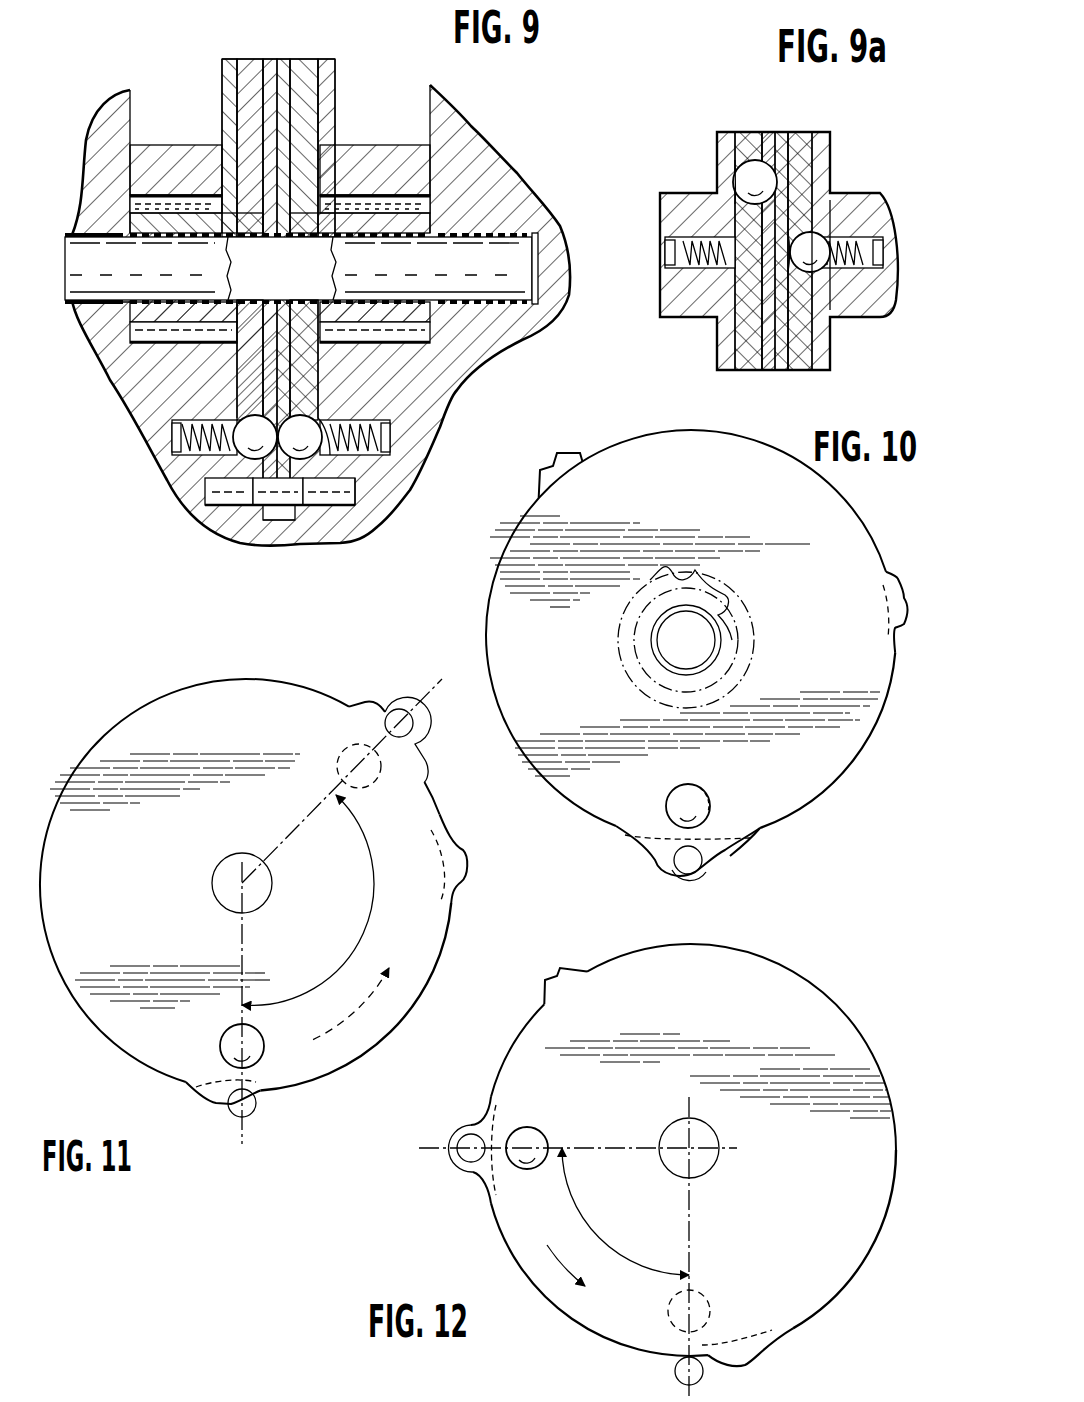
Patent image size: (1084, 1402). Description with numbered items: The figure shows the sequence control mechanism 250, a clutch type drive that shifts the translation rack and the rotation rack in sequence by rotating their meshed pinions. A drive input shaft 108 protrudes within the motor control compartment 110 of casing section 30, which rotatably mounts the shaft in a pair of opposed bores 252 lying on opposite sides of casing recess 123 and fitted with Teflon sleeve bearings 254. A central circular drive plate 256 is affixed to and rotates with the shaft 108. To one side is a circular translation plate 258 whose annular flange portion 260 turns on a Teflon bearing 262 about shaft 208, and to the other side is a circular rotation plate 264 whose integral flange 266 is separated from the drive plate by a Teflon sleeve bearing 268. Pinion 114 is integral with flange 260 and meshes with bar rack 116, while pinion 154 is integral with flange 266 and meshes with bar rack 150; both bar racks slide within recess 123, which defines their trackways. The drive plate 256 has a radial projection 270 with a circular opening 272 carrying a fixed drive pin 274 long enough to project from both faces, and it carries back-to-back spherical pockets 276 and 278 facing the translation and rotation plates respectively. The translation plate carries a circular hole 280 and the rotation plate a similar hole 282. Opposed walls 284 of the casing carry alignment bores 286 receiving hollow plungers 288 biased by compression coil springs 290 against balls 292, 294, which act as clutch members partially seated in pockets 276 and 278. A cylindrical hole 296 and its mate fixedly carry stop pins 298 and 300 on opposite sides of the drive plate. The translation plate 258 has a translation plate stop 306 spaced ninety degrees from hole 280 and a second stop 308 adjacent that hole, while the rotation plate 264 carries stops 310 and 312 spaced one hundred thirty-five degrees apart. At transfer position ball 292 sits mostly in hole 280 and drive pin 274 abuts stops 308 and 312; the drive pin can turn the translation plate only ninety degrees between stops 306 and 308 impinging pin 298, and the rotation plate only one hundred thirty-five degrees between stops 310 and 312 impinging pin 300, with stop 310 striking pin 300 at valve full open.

In FIG. 9, the casing section 30 is at (458, 132).
In FIG. 9, the drive input shaft 108 is at (75, 265).
In FIG. 10, the drive input shaft 108 is at (702, 638).
In FIG. 11, the drive input shaft 108 is at (258, 898).
In FIG. 12, the drive input shaft 108 is at (712, 1158).
In FIG. 9, the motor control compartment 110 is at (165, 345).
In FIG. 9, the pinion 114 is at (152, 203).
In FIG. 10, the pinion 114 is at (728, 582).
In FIG. 9, the bar rack 116 is at (180, 160).
In FIG. 9, the casing recess 123 is at (432, 130).
In FIG. 9, the bar rack 150 is at (390, 160).
In FIG. 9, the pinion 154 is at (496, 228).
In FIG. 10, the shaft 208 is at (655, 852).
In FIG. 9, the sequence control mechanism 250 is at (340, 100).
In FIG. 9, the opposed bores 252 is at (75, 312).
In FIG. 9, the sleeve bearings 254 is at (82, 225).
In FIG. 9, the drive plate 256 is at (281, 75).
In FIG. 9a, the drive plate 256 is at (775, 140).
In FIG. 9, the translation plate 258 is at (228, 60).
In FIG. 9a, the translation plate 258 is at (746, 134).
In FIG. 10, the translation plate 258 is at (815, 772).
In FIG. 11, the translation plate 258 is at (425, 920).
In FIG. 12, the translation plate 258 is at (838, 1035).
In FIG. 9, the annular flange portion 260 is at (195, 225).
In FIG. 9, the Teflon bearing 262 is at (143, 238).
In FIG. 9, the rotation plate 264 is at (335, 70).
In FIG. 9a, the rotation plate 264 is at (800, 136).
In FIG. 9, the flange 266 is at (335, 222).
In FIG. 9, the sleeve bearing 268 is at (378, 240).
In FIG. 9, the radial projection 270 is at (279, 510).
In FIG. 10, the radial projection 270 is at (708, 865).
In FIG. 11, the radial projection 270 is at (398, 708).
In FIG. 12, the radial projection 270 is at (456, 1142).
In FIG. 9, the circular opening 272 is at (298, 497).
In FIG. 9, the drive pin 274 is at (240, 502).
In FIG. 11, the drive pin 274 is at (418, 730).
In FIG. 12, the drive pin 274 is at (462, 1163).
In FIG. 9, the spherical pocket 276 is at (242, 392).
In FIG. 9a, the spherical pocket 276 is at (735, 145).
In FIG. 9, the spherical pocket 278 is at (266, 512).
In FIG. 9a, the spherical pocket 278 is at (790, 163).
In FIG. 9, the circular hole 280 is at (283, 420).
In FIG. 9a, the circular hole 280 is at (740, 205).
In FIG. 10, the circular hole 280 is at (700, 800).
In FIG. 9, the hole 282 is at (318, 402).
In FIG. 9a, the hole 282 is at (830, 312).
In FIG. 9, the opposed walls 284 is at (243, 357).
In FIG. 9, the alignment bores 286 is at (190, 440).
In FIG. 9a, the alignment bores 286 is at (690, 255).
In FIG. 9, the hollow plungers 288 is at (195, 458).
In FIG. 9a, the hollow plungers 288 is at (690, 270).
In FIG. 9, the compression coil springs 290 is at (176, 432).
In FIG. 9a, the compression coil springs 290 is at (668, 248).
In FIG. 9, the ball 292 is at (246, 423).
In FIG. 9a, the ball 292 is at (740, 176).
In FIG. 10, the ball 292 is at (680, 800).
In FIG. 11, the ball 292 is at (260, 1040).
In FIG. 12, the ball 292 is at (536, 1138).
In FIG. 9, the ball 294 is at (338, 412).
In FIG. 9a, the ball 294 is at (835, 215).
In FIG. 11, the ball 294 is at (370, 782).
In FIG. 12, the ball 294 is at (705, 1305).
In FIG. 9, the cylindrical hole 296 is at (343, 507).
In FIG. 9, the stop pin 298 is at (220, 489).
In FIG. 10, the stop pin 298 is at (683, 872).
In FIG. 11, the stop pin 298 is at (258, 1105).
In FIG. 12, the stop pin 298 is at (675, 1372).
In FIG. 9, the stop pin 300 is at (370, 490).
In FIG. 10, the translation plate stop 306 is at (904, 598).
In FIG. 11, the translation plate stop 306 is at (457, 866).
In FIG. 12, the translation plate stop 306 is at (740, 1358).
In FIG. 11, the second stop 308 is at (210, 1098).
In FIG. 12, the second stop 308 is at (480, 1112).
In FIG. 10, the stop 310 is at (558, 455).
In FIG. 12, the stop 310 is at (560, 976).
In FIG. 10, the stop 312 is at (735, 855).
In FIG. 11, the stop 312 is at (372, 698).